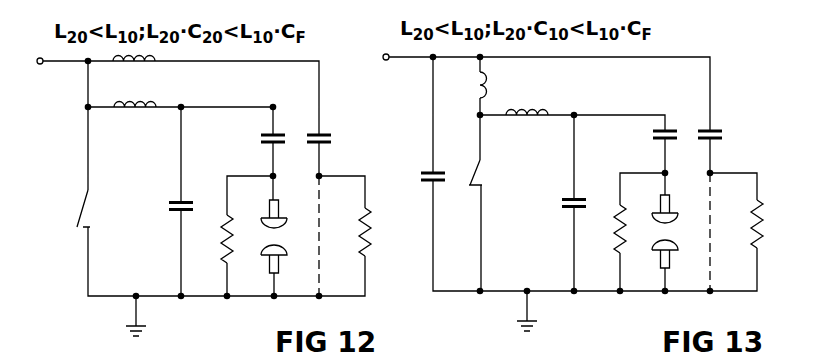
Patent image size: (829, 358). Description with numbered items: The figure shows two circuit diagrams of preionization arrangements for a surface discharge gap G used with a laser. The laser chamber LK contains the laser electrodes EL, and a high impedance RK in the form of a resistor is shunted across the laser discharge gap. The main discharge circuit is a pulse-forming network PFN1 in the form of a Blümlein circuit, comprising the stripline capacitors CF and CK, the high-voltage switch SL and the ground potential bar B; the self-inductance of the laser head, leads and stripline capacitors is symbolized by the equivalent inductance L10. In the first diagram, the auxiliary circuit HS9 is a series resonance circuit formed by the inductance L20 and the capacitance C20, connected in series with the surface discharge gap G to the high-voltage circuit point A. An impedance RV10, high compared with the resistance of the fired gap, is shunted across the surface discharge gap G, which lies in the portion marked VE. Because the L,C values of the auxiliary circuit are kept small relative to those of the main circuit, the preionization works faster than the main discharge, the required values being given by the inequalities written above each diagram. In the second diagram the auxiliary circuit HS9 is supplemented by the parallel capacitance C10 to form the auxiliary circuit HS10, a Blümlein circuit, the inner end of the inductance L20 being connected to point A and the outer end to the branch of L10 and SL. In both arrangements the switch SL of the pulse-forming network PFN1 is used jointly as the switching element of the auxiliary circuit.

In FIG. 12, the circuit point A is at (44, 73).
In FIG. 13, the circuit point A is at (390, 71).
In FIG. 12, the ground potential bar B is at (133, 300).
In FIG. 13, the ground potential bar B is at (531, 298).
In FIG. 12, the inductance L20 is at (143, 67).
In FIG. 13, the inductance L20 is at (487, 86).
In FIG. 12, the equivalent inductance L10 is at (137, 112).
In FIG. 13, the equivalent inductance L10 is at (530, 120).
In FIG. 13, the parallel capacitance C10 is at (445, 172).
In FIG. 12, the capacitance of the auxiliary circuit C20 is at (308, 139).
In FIG. 13, the capacitance of the auxiliary circuit C20 is at (700, 135).
In FIG. 12, the stripline capacitor CK is at (261, 137).
In FIG. 13, the stripline capacitor CK is at (678, 136).
In FIG. 12, the stripline capacitor CF is at (189, 204).
In FIG. 13, the stripline capacitor CF is at (582, 203).
In FIG. 12, the high-voltage switch SL is at (85, 214).
In FIG. 13, the high-voltage switch SL is at (472, 180).
In FIG. 12, the high impedance RK is at (224, 240).
In FIG. 13, the high impedance RK is at (617, 233).
In FIG. 12, the laser electrodes EL is at (266, 248).
In FIG. 13, the laser electrodes EL is at (657, 246).
In FIG. 12, the laser chamber LK is at (279, 236).
In FIG. 13, the laser chamber LK is at (671, 236).
In FIG. 12, the surface discharge gap G is at (322, 233).
In FIG. 13, the surface discharge gap G is at (713, 230).
In FIG. 12, the impedance or resistance RV10 is at (367, 232).
In FIG. 13, the impedance or resistance RV10 is at (755, 233).
In FIG. 12, the auxiliary circuit HS9 is at (262, 91).
In FIG. 13, the auxiliary circuit HS10 is at (640, 91).
In FIG. 12, the consumer / load VE is at (366, 170).
In FIG. 13, the consumer / load VE is at (762, 165).
In FIG. 12, the pulse-forming network PFN1 is at (153, 278).
In FIG. 13, the pulse-forming network PFN1 is at (545, 258).